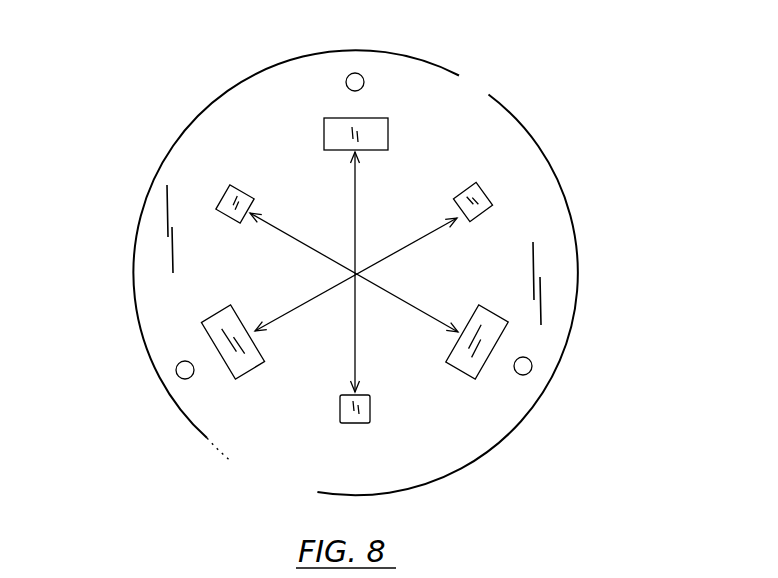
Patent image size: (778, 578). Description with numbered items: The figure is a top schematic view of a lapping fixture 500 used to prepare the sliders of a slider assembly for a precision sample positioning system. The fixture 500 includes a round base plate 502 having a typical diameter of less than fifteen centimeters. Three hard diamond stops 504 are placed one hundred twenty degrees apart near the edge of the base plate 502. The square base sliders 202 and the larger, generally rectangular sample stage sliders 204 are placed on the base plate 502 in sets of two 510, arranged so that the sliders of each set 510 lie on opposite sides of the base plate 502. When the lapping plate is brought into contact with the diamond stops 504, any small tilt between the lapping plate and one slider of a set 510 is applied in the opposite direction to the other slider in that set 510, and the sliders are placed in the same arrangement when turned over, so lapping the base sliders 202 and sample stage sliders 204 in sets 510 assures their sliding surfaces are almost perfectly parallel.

The lapping fixture 500 is at (110, 256).
The base plate 502 is at (555, 221).
The hard diamond stop 504 is at (364, 75).
The set of two 510 is at (424, 232).
The sample stage slider 204 is at (388, 134).
The base slider 202 is at (228, 190).